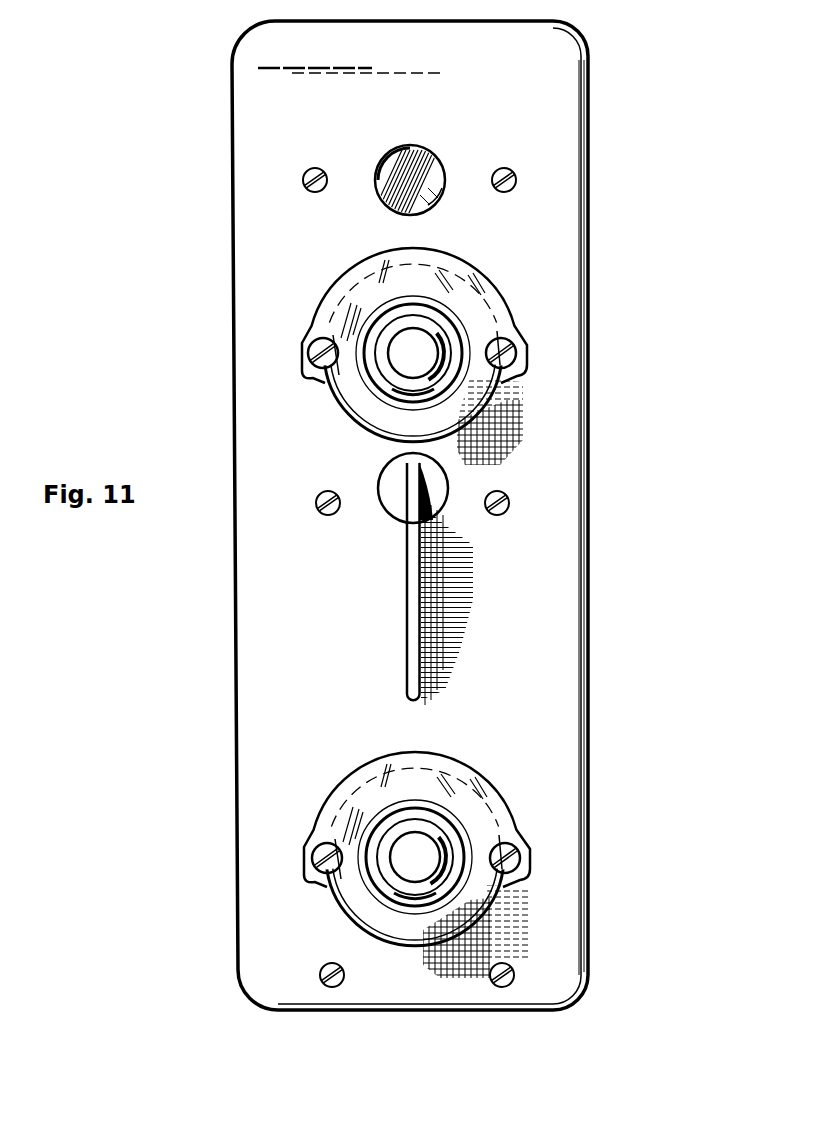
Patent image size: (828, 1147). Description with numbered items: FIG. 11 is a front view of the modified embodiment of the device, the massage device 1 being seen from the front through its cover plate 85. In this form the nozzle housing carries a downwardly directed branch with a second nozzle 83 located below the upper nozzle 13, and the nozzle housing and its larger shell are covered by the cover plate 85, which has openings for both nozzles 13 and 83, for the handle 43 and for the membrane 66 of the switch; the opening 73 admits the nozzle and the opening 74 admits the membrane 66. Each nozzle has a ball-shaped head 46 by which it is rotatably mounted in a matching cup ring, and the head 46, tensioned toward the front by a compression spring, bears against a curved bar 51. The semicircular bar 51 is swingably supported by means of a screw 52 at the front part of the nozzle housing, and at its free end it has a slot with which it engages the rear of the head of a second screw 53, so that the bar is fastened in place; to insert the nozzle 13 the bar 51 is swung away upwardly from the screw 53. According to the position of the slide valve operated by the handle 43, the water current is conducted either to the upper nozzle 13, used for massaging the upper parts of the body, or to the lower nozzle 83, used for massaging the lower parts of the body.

The mounting plate assembly 1 is at (723, 258).
The nozzle 13 is at (385, 373).
The handle 43 is at (413, 626).
The ball-shaped head 46 is at (455, 398).
The curved bar 51 is at (447, 263).
The screw 52 is at (512, 362).
The screw 53 is at (313, 350).
The membrane 66 is at (418, 172).
The opening 73 is at (363, 427).
The opening 74 is at (440, 191).
The second nozzle 83 is at (390, 880).
The cover plate 85 is at (553, 624).